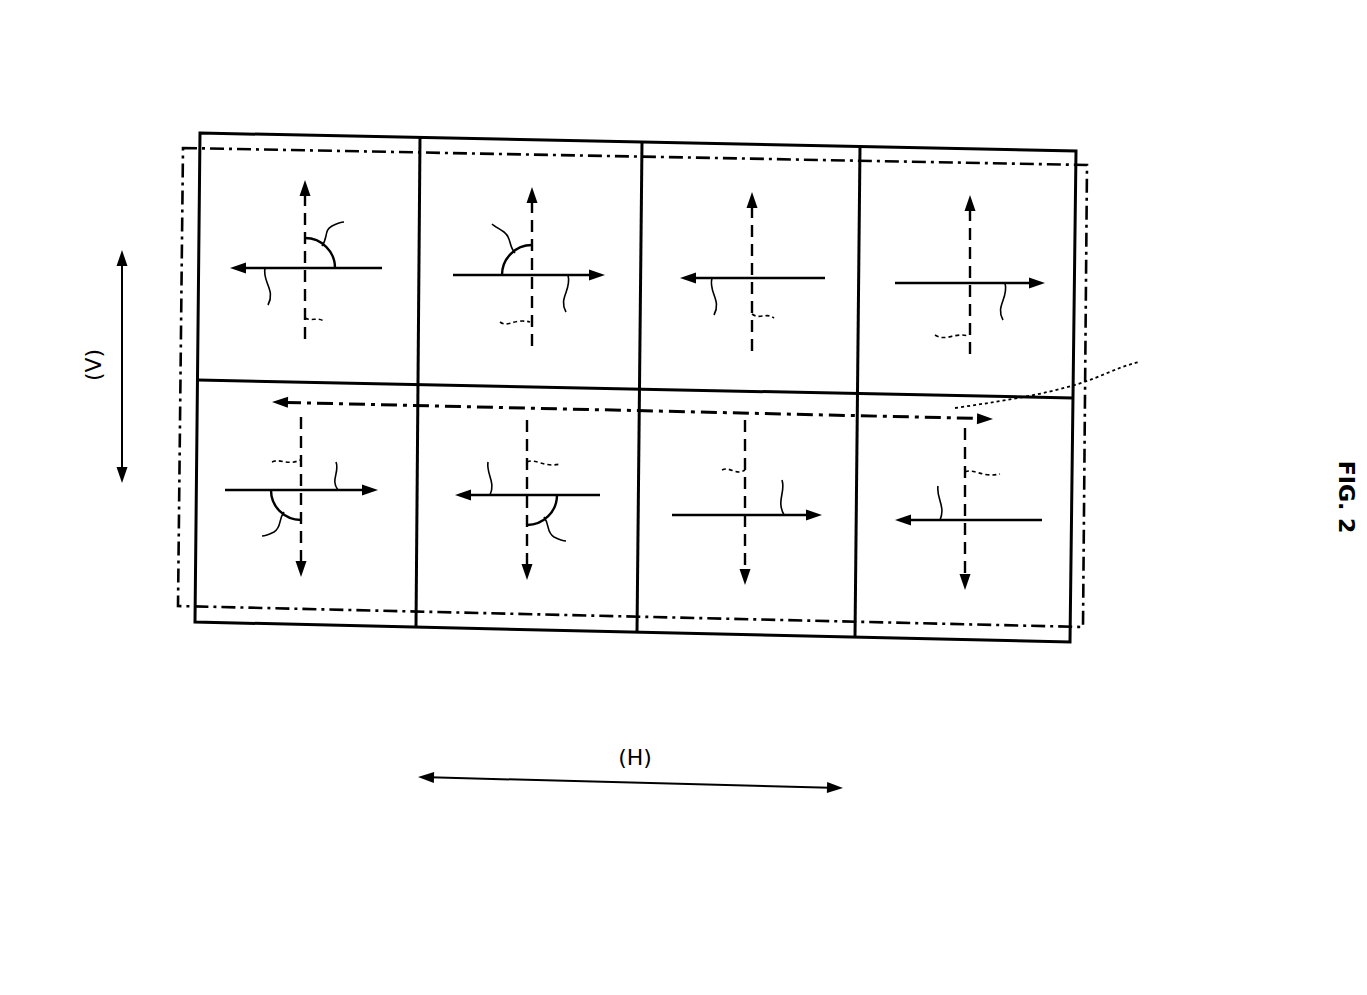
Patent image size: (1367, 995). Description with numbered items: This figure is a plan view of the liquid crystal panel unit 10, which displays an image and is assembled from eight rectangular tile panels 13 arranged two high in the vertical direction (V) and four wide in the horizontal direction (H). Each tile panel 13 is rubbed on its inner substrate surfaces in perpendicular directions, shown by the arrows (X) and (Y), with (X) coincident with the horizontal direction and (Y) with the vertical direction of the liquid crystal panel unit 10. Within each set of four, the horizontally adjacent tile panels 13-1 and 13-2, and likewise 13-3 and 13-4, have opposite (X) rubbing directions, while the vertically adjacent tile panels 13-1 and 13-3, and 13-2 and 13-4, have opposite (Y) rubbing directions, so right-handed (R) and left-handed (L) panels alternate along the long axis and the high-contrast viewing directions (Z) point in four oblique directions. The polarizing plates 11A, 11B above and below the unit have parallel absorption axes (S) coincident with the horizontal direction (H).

The liquid crystal panel unit 10 is at (186, 232).
The polarizing plate 11A is at (713, 372).
The polarizing plate 11B is at (1104, 188).
The tile panel 13 is at (228, 133).
The tile panel 13-1 is at (675, 140).
The tile panel 13-2 is at (453, 137).
The tile panel 13-3 is at (228, 622).
The tile panel 13-4 is at (456, 628).